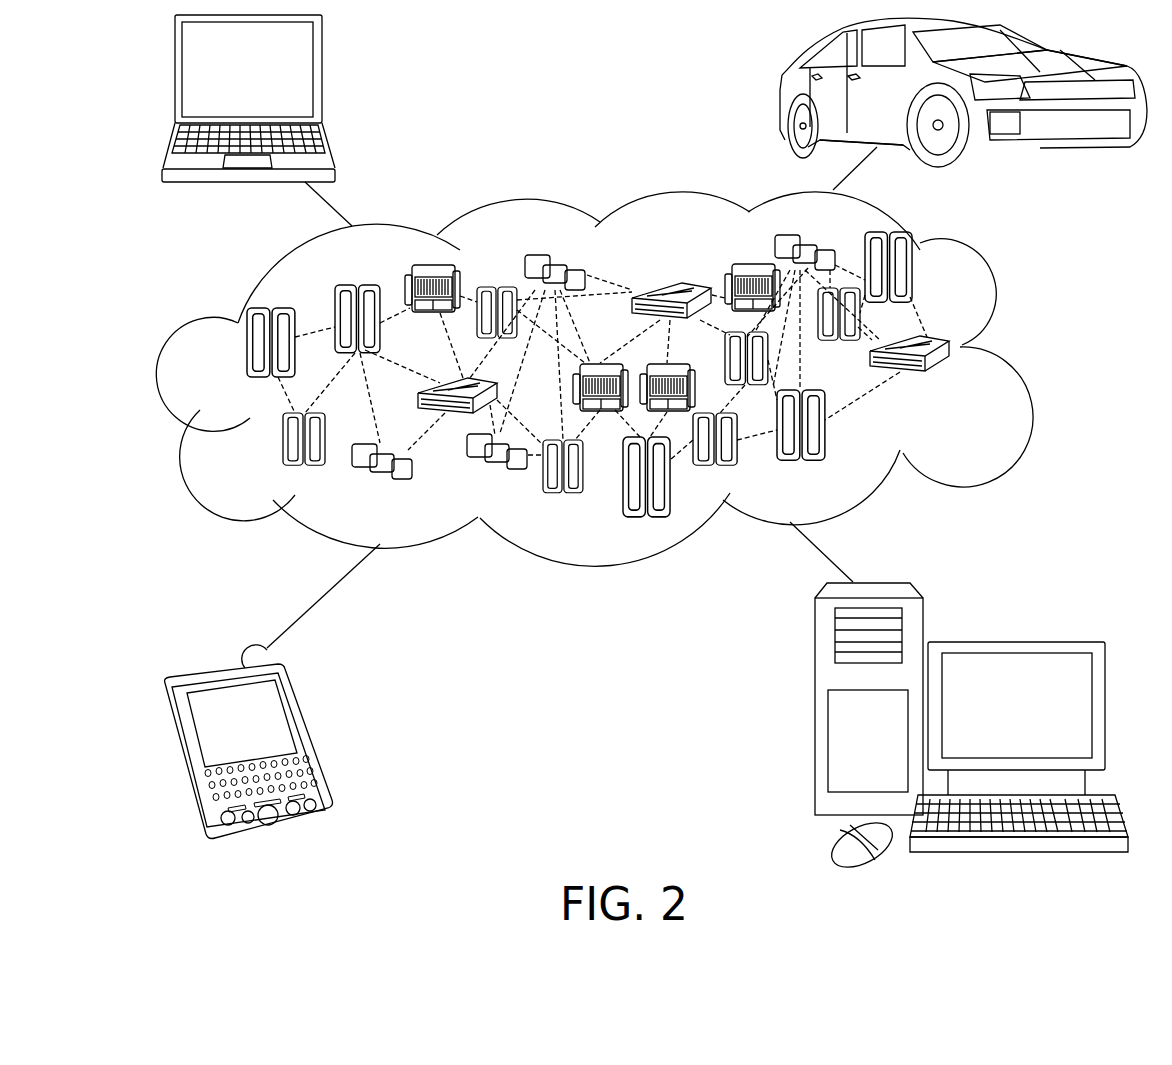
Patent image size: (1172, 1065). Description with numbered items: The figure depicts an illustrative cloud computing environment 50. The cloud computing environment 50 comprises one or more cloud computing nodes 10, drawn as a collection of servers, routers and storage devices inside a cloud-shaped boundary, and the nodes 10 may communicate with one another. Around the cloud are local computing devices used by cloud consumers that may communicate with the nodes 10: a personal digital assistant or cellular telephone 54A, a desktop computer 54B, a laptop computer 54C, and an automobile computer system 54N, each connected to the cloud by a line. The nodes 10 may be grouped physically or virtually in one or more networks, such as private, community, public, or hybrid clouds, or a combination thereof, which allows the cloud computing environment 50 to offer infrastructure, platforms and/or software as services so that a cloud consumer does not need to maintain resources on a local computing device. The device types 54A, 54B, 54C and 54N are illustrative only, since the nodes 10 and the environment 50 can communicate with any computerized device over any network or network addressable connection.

The cloud computing node 10 is at (953, 380).
The cloud computing environment 50 is at (1015, 352).
The personal digital assistant or cellular telephone 54A is at (307, 735).
The desktop computer 54B is at (1012, 642).
The laptop computer 54C is at (322, 78).
The automobile computer system 54N is at (782, 97).